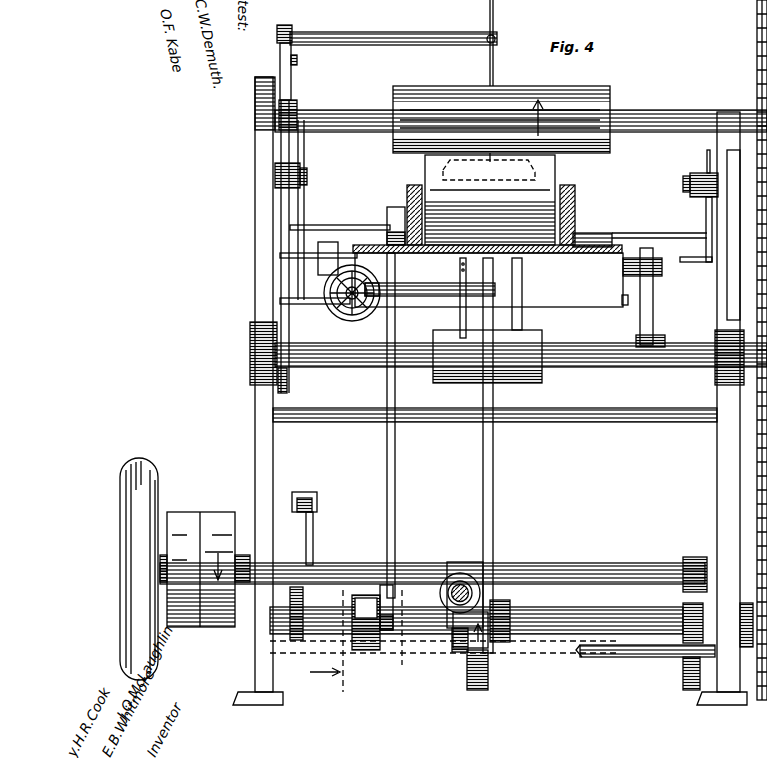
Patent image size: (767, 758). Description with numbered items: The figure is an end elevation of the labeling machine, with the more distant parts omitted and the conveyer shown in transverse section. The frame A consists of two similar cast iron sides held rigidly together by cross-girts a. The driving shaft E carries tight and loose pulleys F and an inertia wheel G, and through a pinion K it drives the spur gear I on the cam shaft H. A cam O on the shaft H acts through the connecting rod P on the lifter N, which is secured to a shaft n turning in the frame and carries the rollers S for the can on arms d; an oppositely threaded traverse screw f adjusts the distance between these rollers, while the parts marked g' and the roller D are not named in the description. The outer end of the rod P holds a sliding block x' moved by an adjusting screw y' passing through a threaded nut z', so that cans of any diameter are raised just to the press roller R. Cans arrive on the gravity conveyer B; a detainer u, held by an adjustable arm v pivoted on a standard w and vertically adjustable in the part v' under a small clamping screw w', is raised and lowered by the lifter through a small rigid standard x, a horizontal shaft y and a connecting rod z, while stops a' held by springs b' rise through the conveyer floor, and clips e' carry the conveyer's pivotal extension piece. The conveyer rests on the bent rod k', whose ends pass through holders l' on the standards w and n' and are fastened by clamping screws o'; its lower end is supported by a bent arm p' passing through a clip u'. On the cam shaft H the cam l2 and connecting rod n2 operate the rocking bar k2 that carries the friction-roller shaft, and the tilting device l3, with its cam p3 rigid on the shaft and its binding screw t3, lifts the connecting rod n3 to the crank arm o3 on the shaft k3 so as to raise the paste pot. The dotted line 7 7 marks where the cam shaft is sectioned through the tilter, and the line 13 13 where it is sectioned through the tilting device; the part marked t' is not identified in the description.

The frame A is at (270, 240).
The gravity conveyer B is at (578, 200).
The roller D is at (490, 200).
The driving shaft E is at (554, 570).
The tight and loose pulleys F is at (205, 569).
The inertia wheel G is at (139, 569).
The cam shaft H is at (570, 630).
The spur gear I is at (683, 664).
The pinion K is at (683, 562).
The lifter N is at (494, 472).
The cam O is at (480, 690).
The connecting rod P is at (458, 652).
The press roller R is at (501, 119).
The carrying rollers S is at (595, 236).
The cross-girts a is at (497, 488).
The stops a' is at (495, 425).
The springs b' is at (488, 320).
The arms d is at (650, 322).
The clips e' is at (632, 299).
The traverse screw f is at (383, 327).
The bearing g' is at (483, 207).
The rod k' is at (696, 238).
The rocking bar k2 is at (304, 212).
The shaft k3 is at (330, 236).
The holders l' is at (496, 171).
The cam l2 is at (296, 641).
The tilting device l3 is at (366, 622).
The shaft n is at (508, 353).
The standard n' is at (742, 235).
The connecting rod n2 is at (314, 545).
The connecting rod n3 is at (394, 472).
The clamping screws o' is at (495, 179).
The crank arm o3 is at (396, 213).
The bent arm p' is at (327, 249).
The cam p3 is at (380, 595).
The knob t' is at (308, 56).
The binding screw t3 is at (298, 118).
The detainer u is at (502, 112).
The clip u' is at (346, 282).
The adjustable arm v is at (272, 56).
The detainer holder v' is at (393, 26).
The standard w is at (253, 114).
The clamping screw w' is at (482, 43).
The standard x is at (479, 298).
The block x' is at (455, 585).
The horizontal shaft y is at (372, 277).
The adjusting screw y' is at (440, 593).
The connecting rod z is at (293, 266).
The threaded nut z' is at (489, 612).
The section line 7 is at (402, 632).
The section line 13 is at (337, 638).